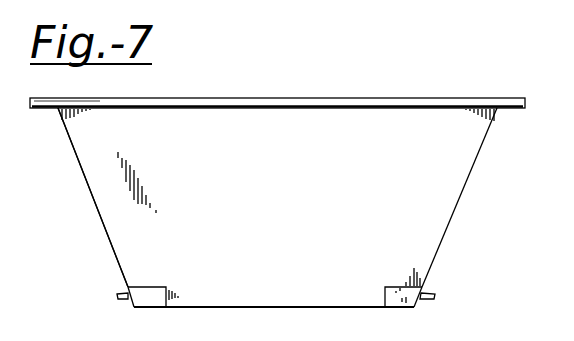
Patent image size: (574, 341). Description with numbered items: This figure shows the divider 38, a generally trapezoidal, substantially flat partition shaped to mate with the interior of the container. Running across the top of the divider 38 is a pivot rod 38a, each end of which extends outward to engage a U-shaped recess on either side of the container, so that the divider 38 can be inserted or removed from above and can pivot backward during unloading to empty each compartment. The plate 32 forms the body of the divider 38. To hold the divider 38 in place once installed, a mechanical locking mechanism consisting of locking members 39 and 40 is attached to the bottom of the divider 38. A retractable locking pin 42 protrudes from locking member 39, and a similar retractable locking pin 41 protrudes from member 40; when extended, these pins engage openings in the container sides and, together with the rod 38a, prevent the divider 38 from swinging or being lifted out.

The pivot rod 38a is at (318, 98).
The divider 38 is at (455, 211).
The plate 32 is at (96, 162).
The locking member 39 is at (153, 287).
The locking member 40 is at (393, 287).
The retractable locking pin 41 is at (423, 302).
The retractable locking pin 42 is at (121, 300).